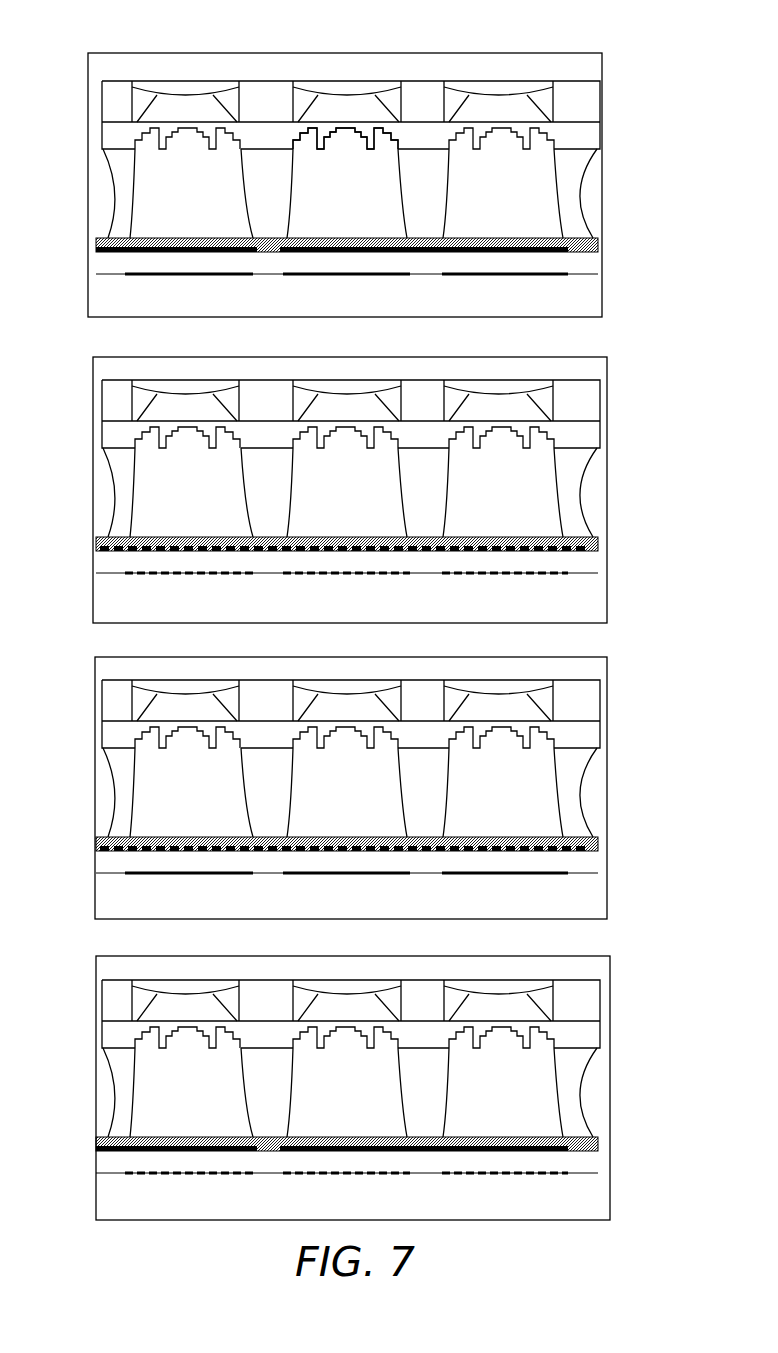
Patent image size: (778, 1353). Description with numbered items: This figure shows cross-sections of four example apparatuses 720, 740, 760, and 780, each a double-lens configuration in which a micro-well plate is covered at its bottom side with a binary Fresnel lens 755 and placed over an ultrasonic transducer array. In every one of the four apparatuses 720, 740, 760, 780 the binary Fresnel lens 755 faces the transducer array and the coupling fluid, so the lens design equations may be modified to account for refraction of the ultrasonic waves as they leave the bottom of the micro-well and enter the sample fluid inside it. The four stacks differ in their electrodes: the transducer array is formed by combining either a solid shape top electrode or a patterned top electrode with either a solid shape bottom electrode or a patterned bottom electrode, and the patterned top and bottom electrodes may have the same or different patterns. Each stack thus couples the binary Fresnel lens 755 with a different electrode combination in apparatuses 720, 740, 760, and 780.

The binary Fresnel lens 755 is at (368, 143).
The example apparatus 720 is at (633, 64).
The example apparatus 740 is at (633, 365).
The example apparatus 760 is at (633, 665).
The example apparatus 780 is at (633, 963).